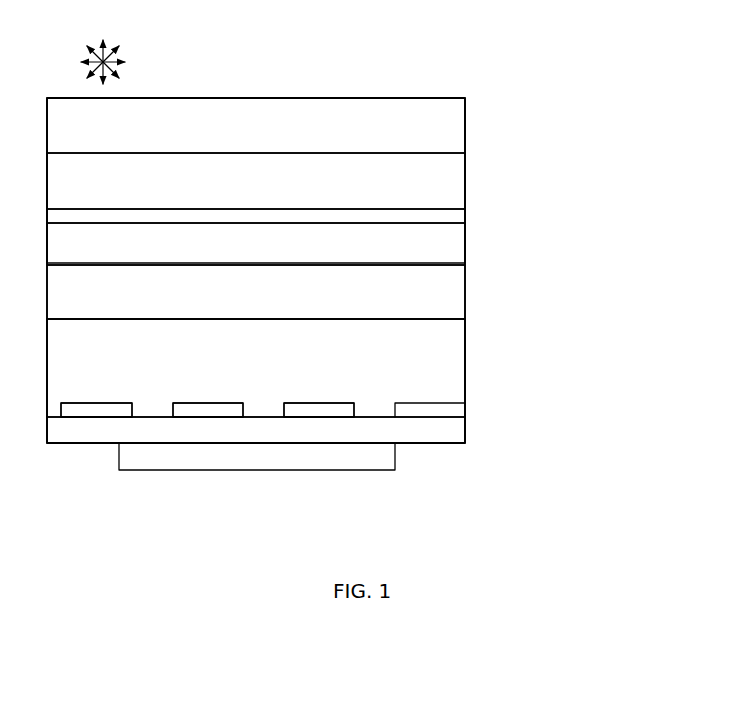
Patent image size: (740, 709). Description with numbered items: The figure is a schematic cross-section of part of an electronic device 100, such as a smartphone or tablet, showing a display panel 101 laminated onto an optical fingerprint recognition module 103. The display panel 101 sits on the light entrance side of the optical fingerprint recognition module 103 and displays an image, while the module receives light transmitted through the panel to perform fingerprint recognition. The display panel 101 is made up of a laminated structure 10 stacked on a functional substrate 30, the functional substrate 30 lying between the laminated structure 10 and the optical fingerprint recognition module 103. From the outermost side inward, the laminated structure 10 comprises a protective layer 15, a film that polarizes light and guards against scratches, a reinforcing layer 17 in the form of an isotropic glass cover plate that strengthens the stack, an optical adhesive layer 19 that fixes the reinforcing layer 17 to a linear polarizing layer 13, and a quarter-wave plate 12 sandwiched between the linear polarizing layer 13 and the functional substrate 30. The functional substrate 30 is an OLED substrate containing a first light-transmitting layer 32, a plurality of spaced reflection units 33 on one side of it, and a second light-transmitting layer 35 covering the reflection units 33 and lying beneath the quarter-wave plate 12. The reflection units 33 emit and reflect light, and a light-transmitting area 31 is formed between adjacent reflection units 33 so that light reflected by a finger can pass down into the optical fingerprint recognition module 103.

The electronic device 100 is at (243, 53).
The display panel 101 is at (607, 182).
The laminated structure 10 is at (553, 102).
The protective layer 15 is at (438, 122).
The reinforcing layer 17 is at (420, 178).
The optical adhesive layer 19 is at (420, 217).
The linear polarizing layer 13 is at (437, 250).
The quarter-wave plate 12 is at (437, 305).
The functional substrate 30 is at (558, 353).
The second light-transmitting layer 35 is at (436, 389).
The reflection units 33 is at (452, 408).
The light-transmitting area 31 is at (155, 410).
The first light-transmitting layer 32 is at (455, 428).
The optical fingerprint recognition module 103 is at (365, 451).